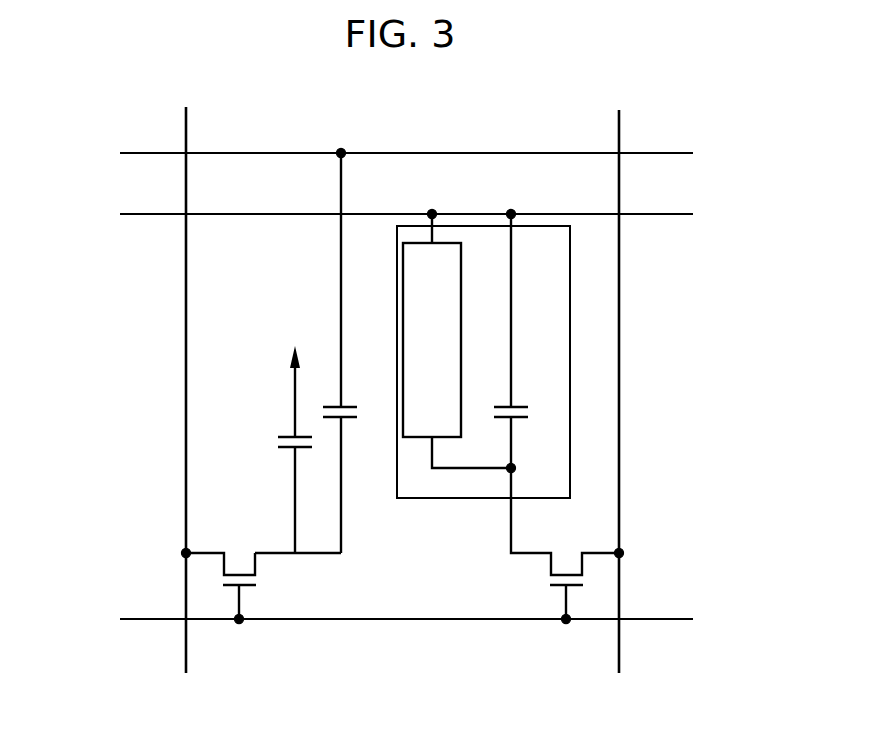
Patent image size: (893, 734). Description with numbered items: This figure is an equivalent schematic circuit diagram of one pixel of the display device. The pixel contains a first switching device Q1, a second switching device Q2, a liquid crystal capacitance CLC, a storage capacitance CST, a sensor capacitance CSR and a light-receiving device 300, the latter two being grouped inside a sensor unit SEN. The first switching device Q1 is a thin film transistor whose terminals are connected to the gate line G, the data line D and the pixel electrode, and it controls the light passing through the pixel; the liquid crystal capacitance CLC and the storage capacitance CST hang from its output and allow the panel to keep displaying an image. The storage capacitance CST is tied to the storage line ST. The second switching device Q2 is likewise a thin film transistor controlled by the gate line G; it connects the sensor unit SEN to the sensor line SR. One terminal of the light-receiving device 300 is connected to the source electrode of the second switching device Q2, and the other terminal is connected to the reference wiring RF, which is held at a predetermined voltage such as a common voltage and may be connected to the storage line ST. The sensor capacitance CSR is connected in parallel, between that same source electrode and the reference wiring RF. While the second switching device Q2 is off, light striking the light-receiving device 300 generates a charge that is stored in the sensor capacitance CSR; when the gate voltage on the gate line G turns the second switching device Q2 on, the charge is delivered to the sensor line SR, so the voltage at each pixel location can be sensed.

The light-receiving device 300 is at (462, 270).
The sensor unit SEN is at (570, 290).
The first switching device Q1 is at (200, 592).
The second switching device Q2 is at (605, 592).
The liquid crystal capacitance CLC is at (276, 449).
The storage capacitance CST is at (322, 351).
The sensor capacitance CSR is at (527, 354).
The data line D is at (186, 378).
The sensor line SR is at (620, 378).
The storage line ST is at (392, 154).
The reference wiring RF is at (392, 215).
The gate line G is at (396, 620).